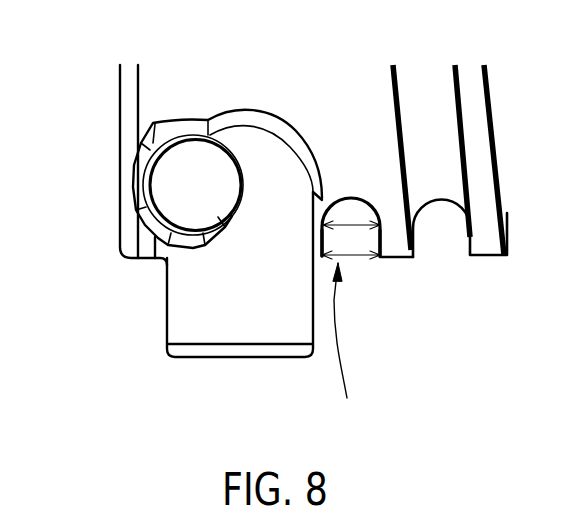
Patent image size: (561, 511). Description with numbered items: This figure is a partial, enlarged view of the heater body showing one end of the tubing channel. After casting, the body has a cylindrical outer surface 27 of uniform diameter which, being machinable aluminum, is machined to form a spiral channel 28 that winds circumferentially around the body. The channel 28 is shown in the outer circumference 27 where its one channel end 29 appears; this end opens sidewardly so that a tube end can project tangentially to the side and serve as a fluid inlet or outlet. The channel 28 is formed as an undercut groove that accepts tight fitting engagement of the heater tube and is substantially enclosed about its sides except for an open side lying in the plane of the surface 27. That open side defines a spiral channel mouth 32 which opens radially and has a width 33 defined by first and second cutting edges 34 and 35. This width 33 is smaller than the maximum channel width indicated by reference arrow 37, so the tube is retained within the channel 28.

The cylindrical outer surface 27 is at (155, 84).
The spiral channel 28 is at (448, 237).
The channel end 29 is at (378, 238).
The spiral channel mouth 32 is at (356, 349).
The width 33 is at (357, 230).
The first cutting edge 34 is at (320, 262).
The second cutting edge 35 is at (380, 258).
The maximum channel width 37 is at (351, 255).